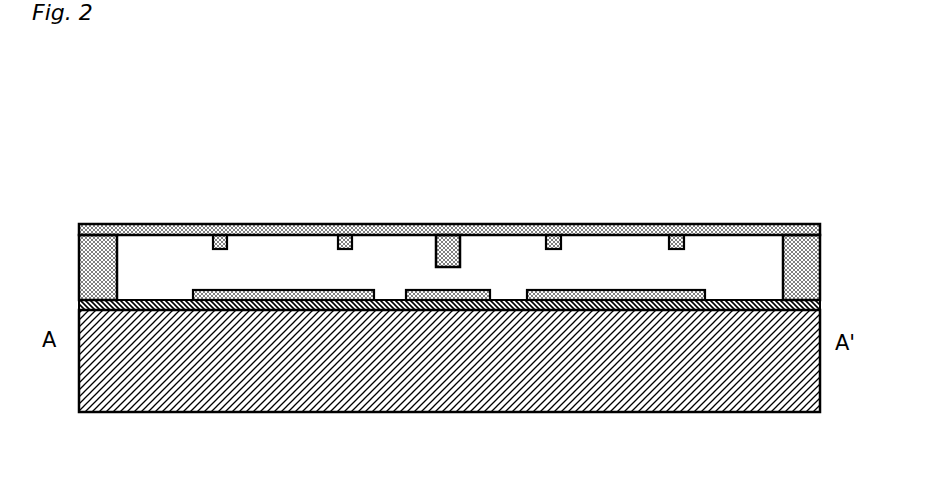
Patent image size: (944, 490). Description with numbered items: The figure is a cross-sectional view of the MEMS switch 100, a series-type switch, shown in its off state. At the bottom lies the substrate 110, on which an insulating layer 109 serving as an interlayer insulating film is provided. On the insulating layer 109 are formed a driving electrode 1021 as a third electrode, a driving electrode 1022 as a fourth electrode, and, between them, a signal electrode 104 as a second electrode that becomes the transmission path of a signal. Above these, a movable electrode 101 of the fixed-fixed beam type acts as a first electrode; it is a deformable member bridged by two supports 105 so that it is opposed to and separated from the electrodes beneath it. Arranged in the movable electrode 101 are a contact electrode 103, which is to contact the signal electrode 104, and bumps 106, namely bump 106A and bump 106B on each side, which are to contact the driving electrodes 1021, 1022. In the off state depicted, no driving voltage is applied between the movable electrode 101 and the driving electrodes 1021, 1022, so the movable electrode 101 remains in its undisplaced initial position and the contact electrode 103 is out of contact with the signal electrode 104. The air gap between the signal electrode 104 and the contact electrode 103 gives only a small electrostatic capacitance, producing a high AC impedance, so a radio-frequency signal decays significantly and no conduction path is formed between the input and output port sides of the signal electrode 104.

The MEMS switch 100 is at (178, 80).
The movable electrode 101 is at (390, 228).
The contact electrode 103 is at (446, 250).
The signal electrode 104 is at (450, 312).
The support 105 is at (97, 270).
The bump 106 is at (312, 122).
The bump 106A is at (222, 237).
The bump 106B is at (343, 240).
The insulating layer 109 is at (205, 312).
The substrate 110 is at (720, 375).
The driving electrode 1021 is at (287, 302).
The driving electrode 1022 is at (590, 310).